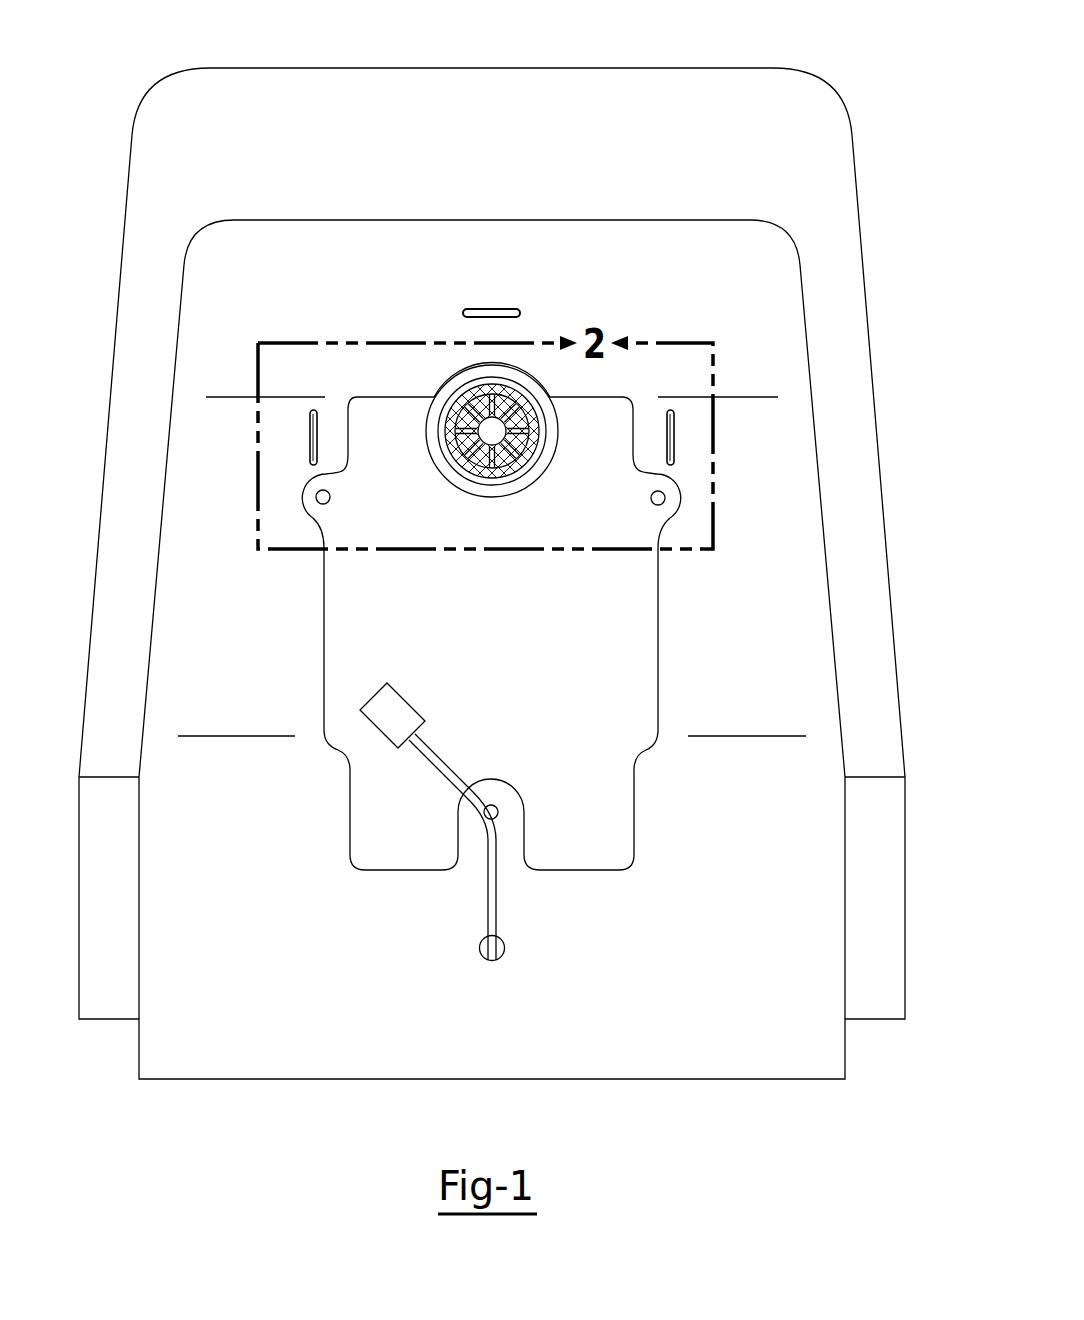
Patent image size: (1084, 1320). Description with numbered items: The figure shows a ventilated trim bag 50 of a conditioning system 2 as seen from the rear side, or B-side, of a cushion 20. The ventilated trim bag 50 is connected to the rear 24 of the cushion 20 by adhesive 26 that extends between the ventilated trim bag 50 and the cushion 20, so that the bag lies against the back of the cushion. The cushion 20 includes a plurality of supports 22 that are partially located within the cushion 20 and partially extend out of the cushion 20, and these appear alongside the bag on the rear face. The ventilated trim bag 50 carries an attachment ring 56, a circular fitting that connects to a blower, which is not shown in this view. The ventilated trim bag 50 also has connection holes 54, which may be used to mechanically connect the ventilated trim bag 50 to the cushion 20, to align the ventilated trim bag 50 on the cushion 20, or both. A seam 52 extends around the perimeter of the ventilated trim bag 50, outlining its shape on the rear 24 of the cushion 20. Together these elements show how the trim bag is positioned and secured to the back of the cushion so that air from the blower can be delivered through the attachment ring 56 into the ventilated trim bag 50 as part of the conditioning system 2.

The conditioning system 2 is at (849, 64).
The cushion 20 is at (290, 950).
The supports 22 is at (482, 307).
The rear 24 is at (492, 498).
The adhesive 26 is at (684, 664).
The ventilated trim bag 50 is at (379, 649).
The seam 52 is at (636, 808).
The connection holes 54 is at (664, 497).
The attachment ring 56 is at (446, 390).